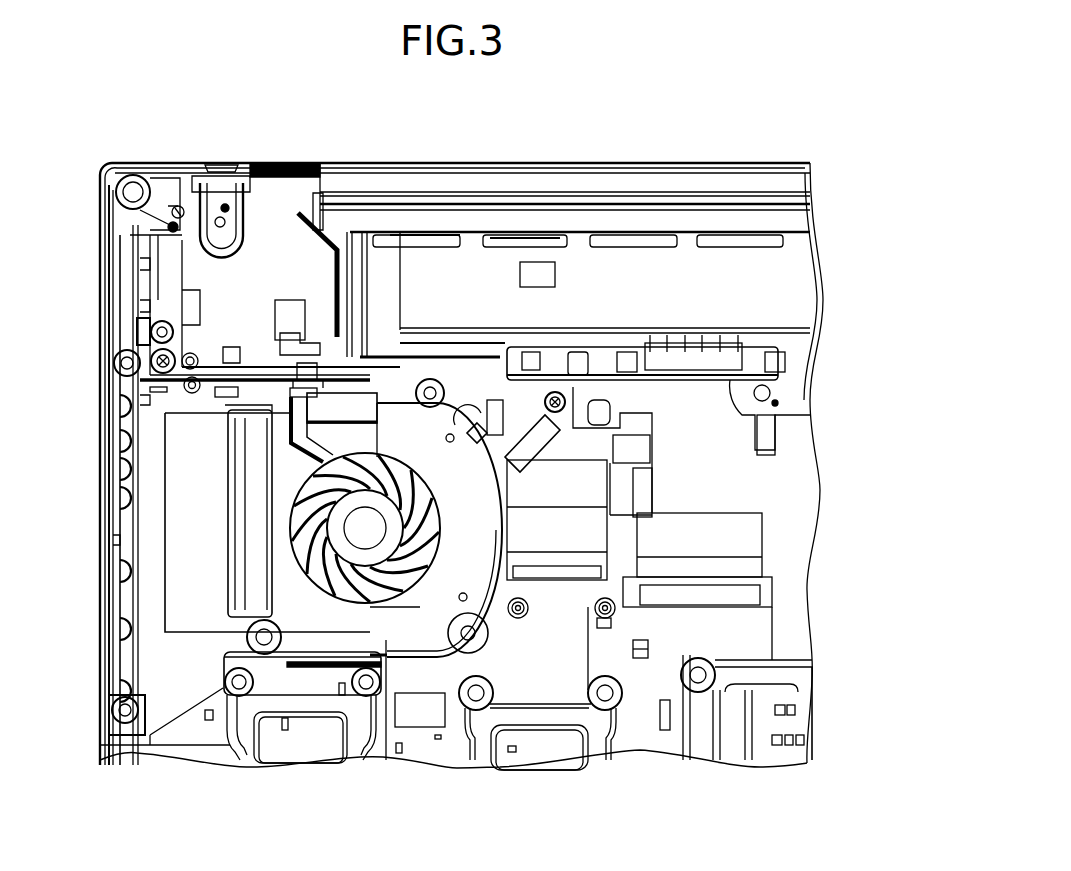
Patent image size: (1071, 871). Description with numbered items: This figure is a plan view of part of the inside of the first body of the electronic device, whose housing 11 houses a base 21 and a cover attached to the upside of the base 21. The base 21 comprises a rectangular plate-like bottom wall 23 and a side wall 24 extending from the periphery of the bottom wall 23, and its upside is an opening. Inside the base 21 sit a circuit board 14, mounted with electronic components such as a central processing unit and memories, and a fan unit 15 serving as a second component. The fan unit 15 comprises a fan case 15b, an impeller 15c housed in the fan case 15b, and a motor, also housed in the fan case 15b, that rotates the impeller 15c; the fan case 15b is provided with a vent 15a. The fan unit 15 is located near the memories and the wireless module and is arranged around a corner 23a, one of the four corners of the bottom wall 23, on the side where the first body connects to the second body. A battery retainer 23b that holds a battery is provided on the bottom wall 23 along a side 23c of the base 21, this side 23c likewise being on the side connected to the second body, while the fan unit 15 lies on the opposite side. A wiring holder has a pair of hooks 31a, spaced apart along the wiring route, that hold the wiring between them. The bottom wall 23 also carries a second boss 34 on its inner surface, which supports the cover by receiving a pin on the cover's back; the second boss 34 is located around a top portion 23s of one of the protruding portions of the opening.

The housing 11 is at (100, 492).
The circuit board 14 is at (642, 735).
The fan unit 15 is at (392, 613).
The vent 15a is at (323, 587).
The fan case 15b is at (393, 633).
The impeller 15c is at (334, 603).
The base 21 is at (100, 549).
The bottom wall 23 is at (272, 270).
The corner 23a is at (203, 270).
The battery retainer 23b is at (375, 280).
The side 23c is at (702, 178).
The top portion 23s is at (470, 390).
The side wall 24 is at (100, 434).
The hooks 31a is at (497, 390).
The second boss 34 is at (412, 388).